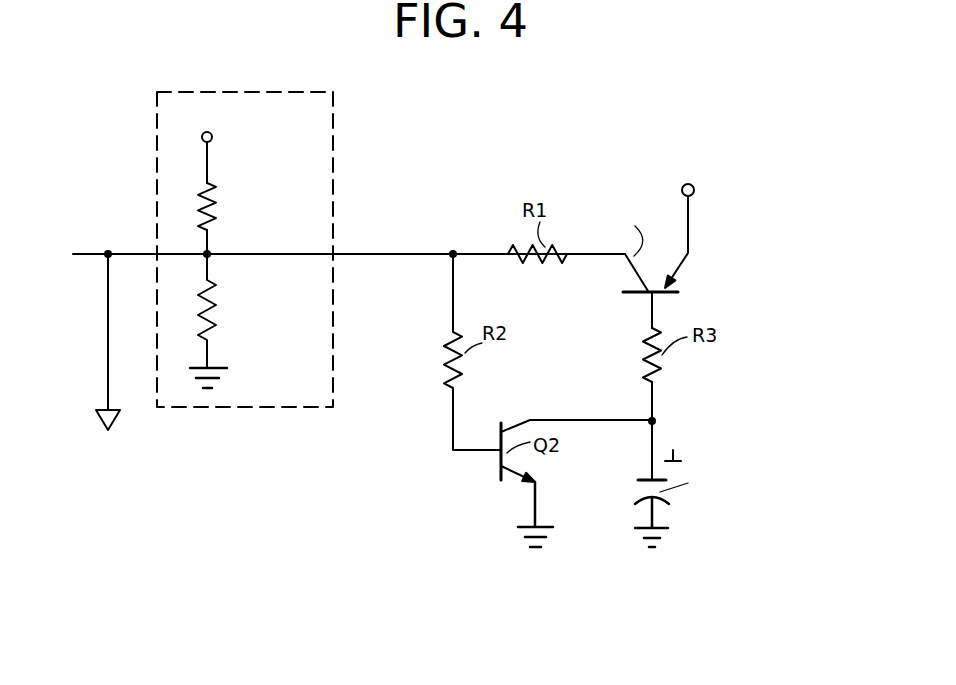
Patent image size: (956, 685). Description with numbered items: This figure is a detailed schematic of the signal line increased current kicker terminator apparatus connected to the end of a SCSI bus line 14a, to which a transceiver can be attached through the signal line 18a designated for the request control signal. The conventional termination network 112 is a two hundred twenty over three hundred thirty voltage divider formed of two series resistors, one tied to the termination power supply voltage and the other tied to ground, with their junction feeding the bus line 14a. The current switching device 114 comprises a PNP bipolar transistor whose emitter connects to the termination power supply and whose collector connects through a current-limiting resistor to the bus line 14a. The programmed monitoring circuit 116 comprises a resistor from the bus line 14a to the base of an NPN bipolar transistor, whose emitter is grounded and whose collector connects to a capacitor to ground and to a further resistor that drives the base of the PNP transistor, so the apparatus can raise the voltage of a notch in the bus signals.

The termination network 112 is at (228, 90).
The bus line 14a is at (128, 253).
The signal line 18a is at (108, 333).
The current switching device 114 is at (768, 288).
The programmed monitoring circuit 116 is at (765, 442).